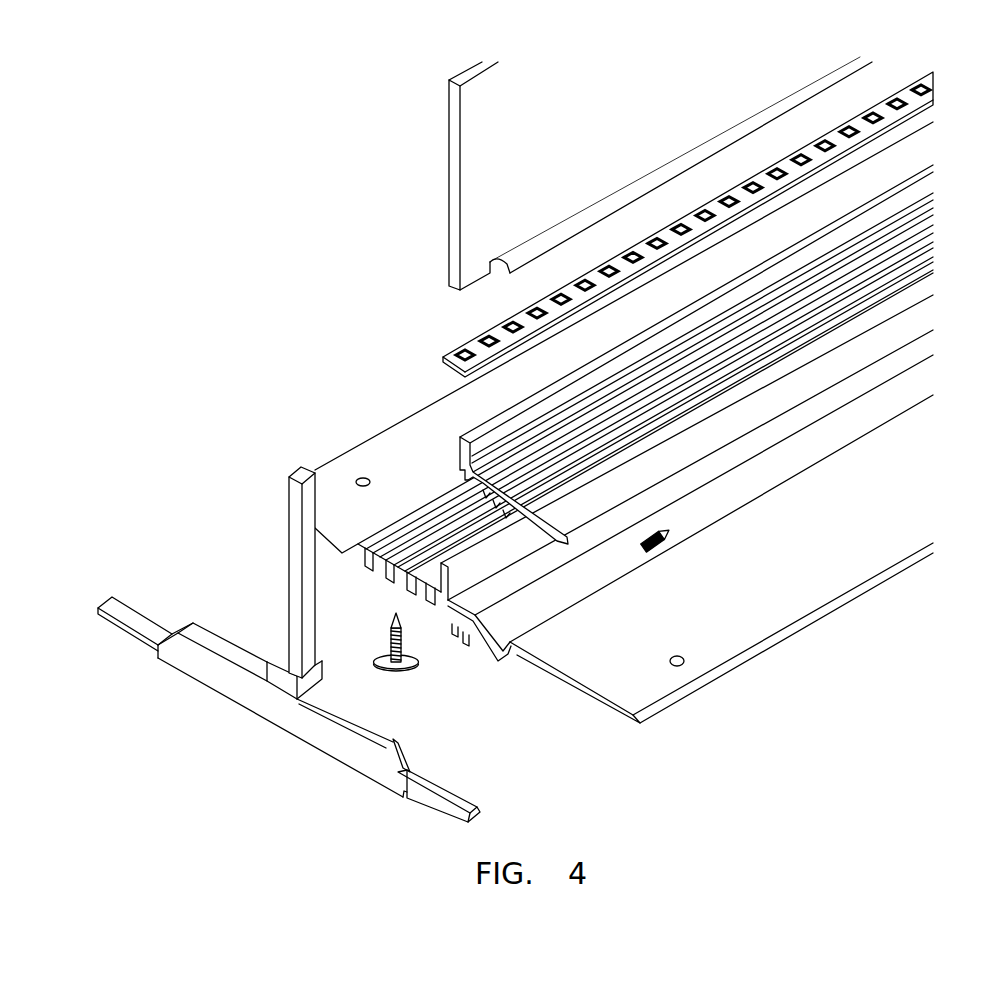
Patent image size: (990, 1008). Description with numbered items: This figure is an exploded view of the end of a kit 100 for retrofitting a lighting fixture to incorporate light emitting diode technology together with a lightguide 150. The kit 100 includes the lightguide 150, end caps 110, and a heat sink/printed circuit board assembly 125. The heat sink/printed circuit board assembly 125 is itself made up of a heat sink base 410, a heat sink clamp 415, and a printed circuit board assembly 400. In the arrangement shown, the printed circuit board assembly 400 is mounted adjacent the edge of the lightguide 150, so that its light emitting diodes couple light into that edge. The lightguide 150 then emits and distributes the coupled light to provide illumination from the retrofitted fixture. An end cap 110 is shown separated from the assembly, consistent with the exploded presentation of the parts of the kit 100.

The kit 100 is at (236, 803).
The end cap 110 is at (289, 543).
The heat sink/printed circuit board assembly 125 is at (355, 436).
The lightguide 150 is at (546, 164).
The printed circuit board assembly 400 is at (468, 335).
The heat sink base 410 is at (510, 660).
The heat sink clamp 415 is at (470, 432).